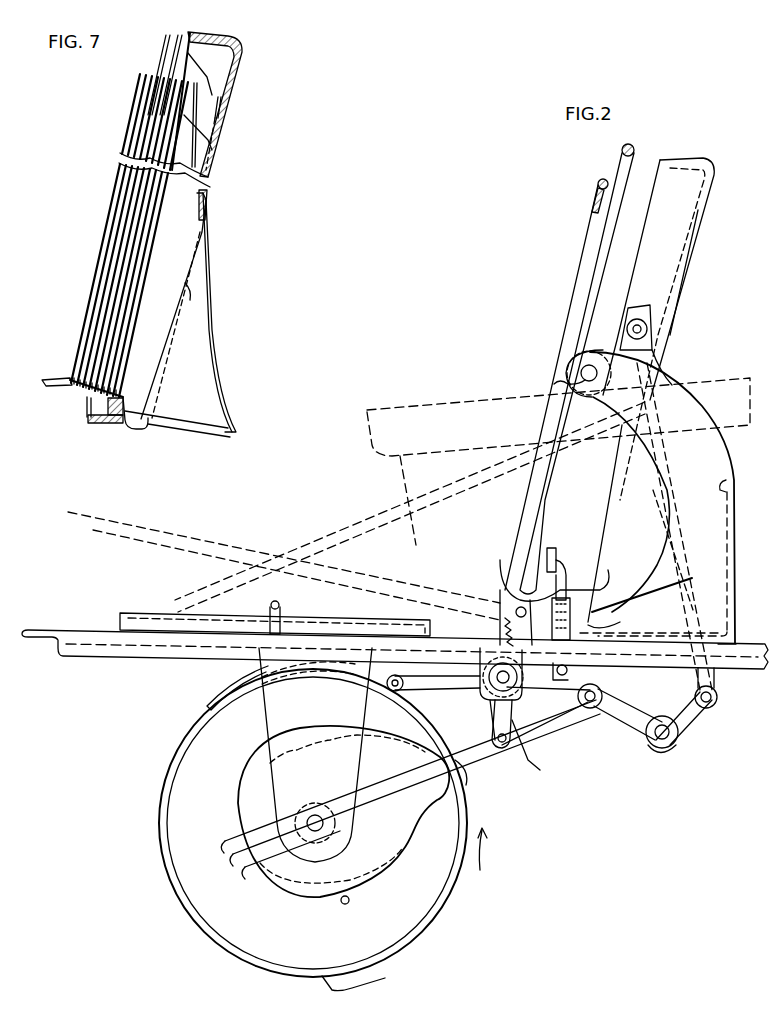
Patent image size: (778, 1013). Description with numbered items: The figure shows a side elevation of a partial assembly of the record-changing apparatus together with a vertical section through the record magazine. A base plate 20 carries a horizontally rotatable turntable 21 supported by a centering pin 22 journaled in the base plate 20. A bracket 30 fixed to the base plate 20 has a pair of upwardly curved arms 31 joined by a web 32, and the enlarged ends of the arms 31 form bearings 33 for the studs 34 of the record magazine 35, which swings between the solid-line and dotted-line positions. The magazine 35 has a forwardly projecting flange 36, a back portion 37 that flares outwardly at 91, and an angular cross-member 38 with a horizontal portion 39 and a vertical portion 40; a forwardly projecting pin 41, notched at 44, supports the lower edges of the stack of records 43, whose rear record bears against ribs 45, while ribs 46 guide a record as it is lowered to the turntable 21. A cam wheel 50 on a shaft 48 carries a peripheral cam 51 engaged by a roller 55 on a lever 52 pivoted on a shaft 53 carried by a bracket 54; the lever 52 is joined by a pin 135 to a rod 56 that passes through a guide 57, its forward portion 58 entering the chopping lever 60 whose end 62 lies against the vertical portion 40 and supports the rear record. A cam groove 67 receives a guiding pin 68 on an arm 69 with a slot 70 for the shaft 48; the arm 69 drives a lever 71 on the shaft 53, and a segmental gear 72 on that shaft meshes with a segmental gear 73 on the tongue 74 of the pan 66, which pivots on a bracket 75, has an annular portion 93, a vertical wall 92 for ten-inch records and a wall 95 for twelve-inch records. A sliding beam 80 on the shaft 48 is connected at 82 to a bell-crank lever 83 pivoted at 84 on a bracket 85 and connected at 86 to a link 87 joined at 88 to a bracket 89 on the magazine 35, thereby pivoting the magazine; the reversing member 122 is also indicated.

In FIG. 2, the base plate 20 is at (52, 628).
In FIG. 2, the turntable 21 is at (120, 614).
In FIG. 2, the centering pin 22 is at (270, 605).
In FIG. 2, the bracket 30 is at (720, 644).
In FIG. 2, the arms 31 is at (690, 414).
In FIG. 2, the web 32 is at (724, 470).
In FIG. 2, the bearings 33 is at (560, 352).
In FIG. 2, the studs 34 is at (580, 373).
In FIG. 2, the record magazine 35 is at (688, 287).
In FIG. 7, the flange 36 is at (232, 40).
In FIG. 2, the flange 36 is at (676, 168).
In FIG. 7, the back portion 37 is at (226, 122).
In FIG. 2, the back portion 37 is at (702, 238).
In FIG. 7, the cross-member 38 is at (108, 436).
In FIG. 7, the horizontal portion 39 is at (88, 414).
In FIG. 7, the vertical portion 40 is at (145, 422).
In FIG. 7, the pin 41 is at (56, 382).
In FIG. 7, the records 43 is at (125, 220).
In FIG. 7, the notch 44 is at (72, 366).
In FIG. 7, the ribs 45 is at (200, 78).
In FIG. 7, the ribs 46 is at (190, 280).
In FIG. 2, the shaft 48 is at (318, 840).
In FIG. 2, the cam wheel 50 is at (292, 965).
In FIG. 2, the cam 51 is at (355, 986).
In FIG. 2, the lever 52 is at (430, 690).
In FIG. 2, the shaft 53 is at (492, 690).
In FIG. 2, the bracket 54 is at (525, 740).
In FIG. 2, the roller 55 is at (375, 690).
In FIG. 2, the rod 56 is at (560, 566).
In FIG. 2, the guide 57 is at (566, 590).
In FIG. 2, the forward portion 58 is at (548, 558).
In FIG. 2, the chopping lever 60 is at (562, 540).
In FIG. 7, the end of lever 62 is at (90, 424).
In FIG. 2, the pan 66 is at (165, 530).
In FIG. 2, the cam groove 67 is at (345, 900).
In FIG. 2, the guiding pin 68 is at (470, 786).
In FIG. 2, the arm 69 is at (470, 770).
In FIG. 2, the slot 70 is at (250, 880).
In FIG. 2, the lever 71 is at (494, 716).
In FIG. 2, the segmental gear 72 is at (514, 690).
In FIG. 2, the segmental gear 73 is at (605, 626).
In FIG. 2, the tongue 74 is at (605, 590).
In FIG. 2, the bracket 75 is at (500, 590).
In FIG. 2, the sliding beam 80 is at (520, 750).
In FIG. 2, the connection 82 is at (590, 712).
In FIG. 2, the bell-crank lever 83 is at (626, 742).
In FIG. 2, the pivot 84 is at (662, 748).
In FIG. 2, the bracket 85 is at (668, 756).
In FIG. 2, the connection 86 is at (706, 710).
In FIG. 2, the link 87 is at (714, 682).
In FIG. 2, the connection 88 is at (652, 329).
In FIG. 2, the bracket 89 is at (655, 365).
In FIG. 7, the flared portion 91 is at (228, 400).
In FIG. 2, the flared portion 91 is at (432, 553).
In FIG. 2, the vertical wall 92 is at (598, 186).
In FIG. 2, the annular portion 93 is at (592, 204).
In FIG. 2, the wall 95 is at (622, 150).
In FIG. 2, the reversing member 122 is at (216, 688).
In FIG. 2, the pin 135 is at (568, 670).